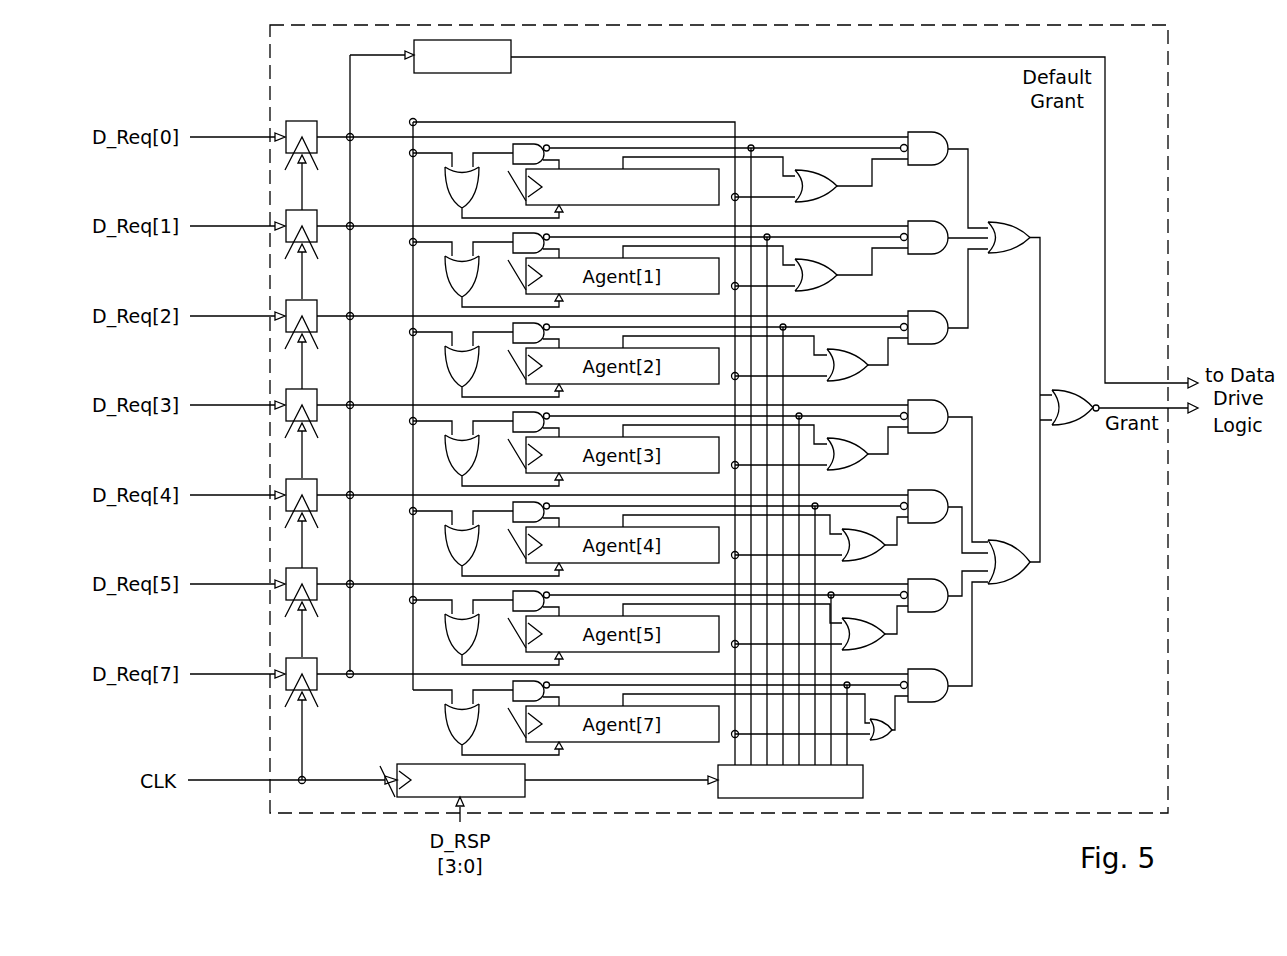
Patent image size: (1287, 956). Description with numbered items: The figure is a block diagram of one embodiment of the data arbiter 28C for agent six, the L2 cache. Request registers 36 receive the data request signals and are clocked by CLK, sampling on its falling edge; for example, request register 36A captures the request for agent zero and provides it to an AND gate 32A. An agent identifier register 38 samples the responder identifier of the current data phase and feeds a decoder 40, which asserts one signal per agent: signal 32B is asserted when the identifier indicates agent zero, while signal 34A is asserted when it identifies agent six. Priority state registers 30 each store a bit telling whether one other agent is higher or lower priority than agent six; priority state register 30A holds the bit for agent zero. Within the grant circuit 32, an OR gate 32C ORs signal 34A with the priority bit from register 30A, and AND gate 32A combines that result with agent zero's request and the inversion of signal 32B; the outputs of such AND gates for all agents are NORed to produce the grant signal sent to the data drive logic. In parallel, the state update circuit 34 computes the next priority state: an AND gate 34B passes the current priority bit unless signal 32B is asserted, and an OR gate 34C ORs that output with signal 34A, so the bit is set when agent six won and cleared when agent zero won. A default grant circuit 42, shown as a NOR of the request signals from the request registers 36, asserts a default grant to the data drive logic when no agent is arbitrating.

The data arbiter 28C is at (1140, 810).
The request registers 36 is at (308, 108).
The request register 36A is at (287, 152).
The state update circuit 34 is at (482, 148).
The signal 34A is at (688, 122).
The AND gate 34B is at (527, 150).
The OR gate 34C is at (462, 185).
The priority state registers 30 is at (613, 150).
The priority state register 30A is at (623, 204).
The grant circuit 32 is at (1077, 669).
The AND gate 32A is at (928, 138).
The signal 32B is at (783, 150).
The OR gate 32C is at (815, 185).
The agent identifier register 38 is at (445, 764).
The decoder 40 is at (863, 778).
The default grant circuit 42 is at (463, 73).